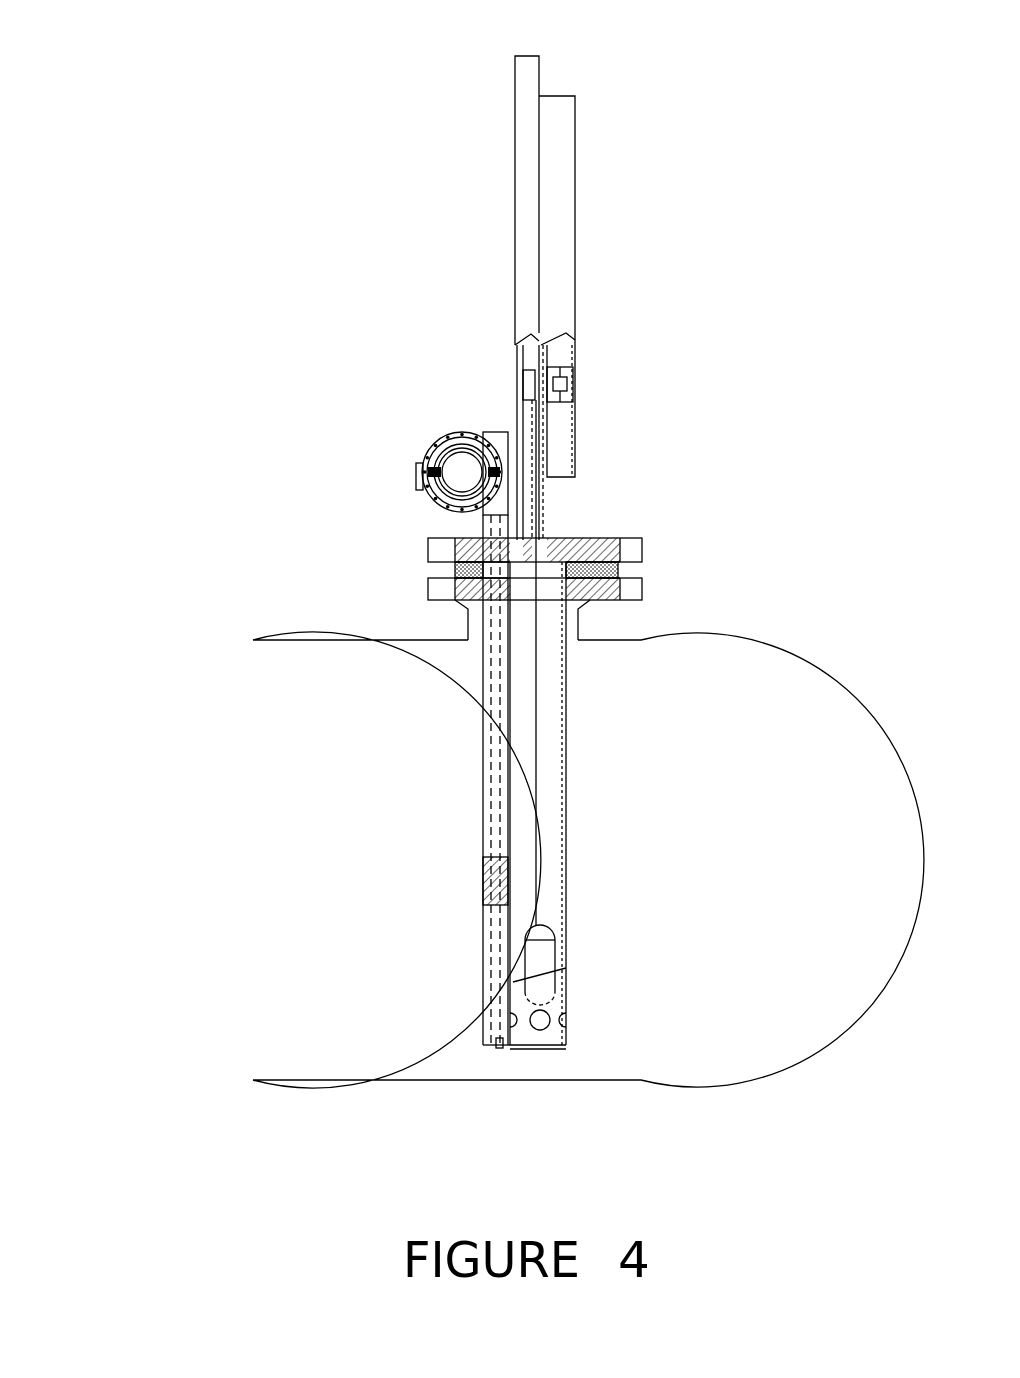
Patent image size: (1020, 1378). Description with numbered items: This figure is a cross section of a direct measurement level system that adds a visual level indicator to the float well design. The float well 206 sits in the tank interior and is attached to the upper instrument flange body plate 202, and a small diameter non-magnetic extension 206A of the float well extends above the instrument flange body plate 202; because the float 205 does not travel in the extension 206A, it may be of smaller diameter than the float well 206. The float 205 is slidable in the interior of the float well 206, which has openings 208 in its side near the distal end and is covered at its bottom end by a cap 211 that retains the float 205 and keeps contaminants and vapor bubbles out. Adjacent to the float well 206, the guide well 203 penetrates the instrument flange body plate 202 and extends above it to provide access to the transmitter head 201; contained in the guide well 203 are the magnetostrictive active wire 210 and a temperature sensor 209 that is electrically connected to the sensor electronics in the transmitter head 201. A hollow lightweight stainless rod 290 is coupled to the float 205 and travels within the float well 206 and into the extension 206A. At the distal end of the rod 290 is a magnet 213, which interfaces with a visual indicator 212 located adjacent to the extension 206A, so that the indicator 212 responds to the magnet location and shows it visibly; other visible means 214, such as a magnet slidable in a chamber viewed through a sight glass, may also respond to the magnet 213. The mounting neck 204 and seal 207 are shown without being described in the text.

The transmitter head 201 is at (418, 453).
The instrument flange body plate 202 is at (642, 545).
The guide well 203 is at (481, 823).
The tank neck 204 is at (467, 620).
The float 205 is at (545, 957).
The float well 206 is at (566, 771).
The extension 206A is at (516, 177).
The seal 207 is at (435, 567).
The openings 208 is at (551, 1013).
The temperature sensor 209 is at (495, 1052).
The magnetostrictive active wire 210 is at (481, 884).
The cap 211 is at (560, 1052).
The visual indicator 212 is at (575, 242).
The magnet 213 is at (520, 376).
The visible means 214 is at (575, 385).
The rod 290 is at (540, 687).